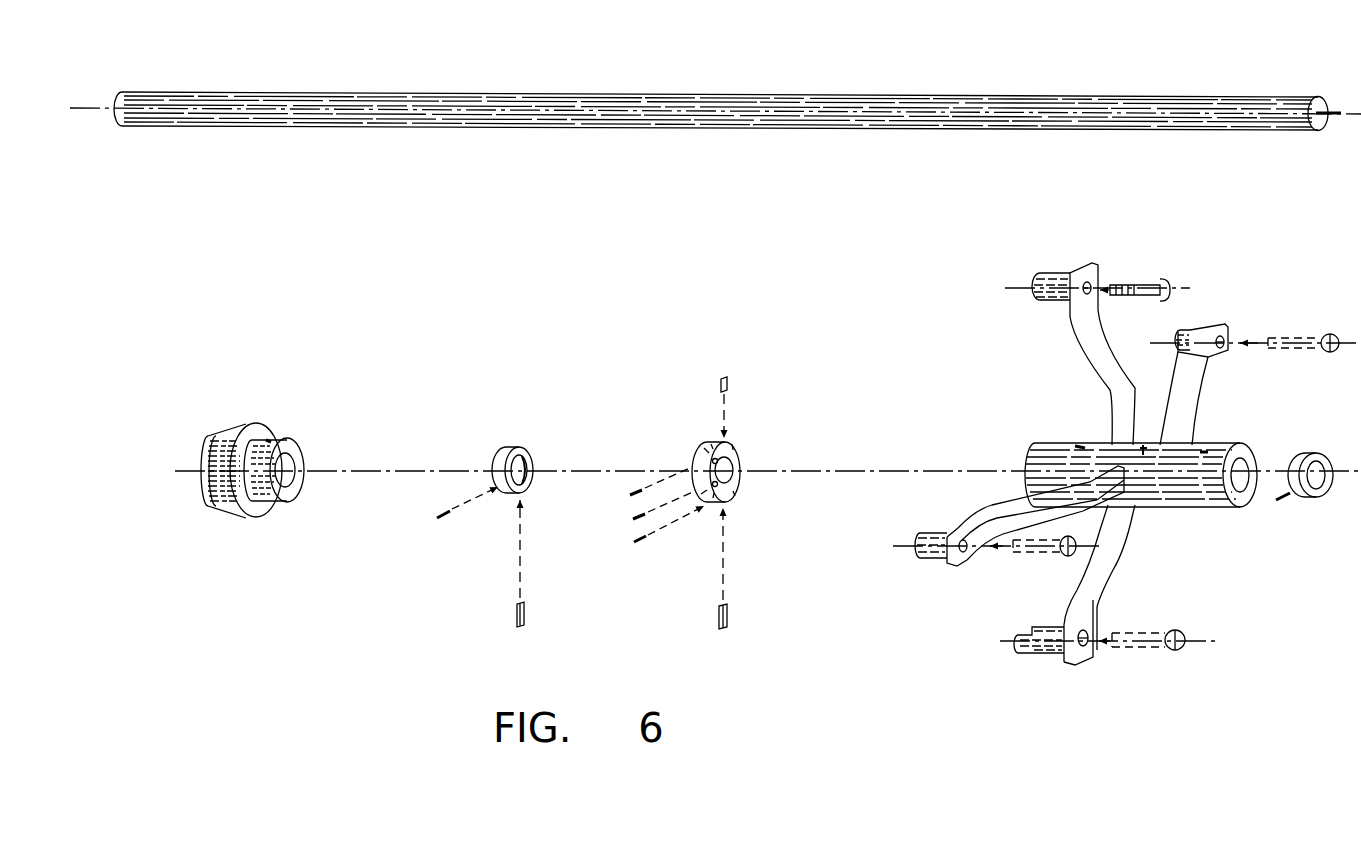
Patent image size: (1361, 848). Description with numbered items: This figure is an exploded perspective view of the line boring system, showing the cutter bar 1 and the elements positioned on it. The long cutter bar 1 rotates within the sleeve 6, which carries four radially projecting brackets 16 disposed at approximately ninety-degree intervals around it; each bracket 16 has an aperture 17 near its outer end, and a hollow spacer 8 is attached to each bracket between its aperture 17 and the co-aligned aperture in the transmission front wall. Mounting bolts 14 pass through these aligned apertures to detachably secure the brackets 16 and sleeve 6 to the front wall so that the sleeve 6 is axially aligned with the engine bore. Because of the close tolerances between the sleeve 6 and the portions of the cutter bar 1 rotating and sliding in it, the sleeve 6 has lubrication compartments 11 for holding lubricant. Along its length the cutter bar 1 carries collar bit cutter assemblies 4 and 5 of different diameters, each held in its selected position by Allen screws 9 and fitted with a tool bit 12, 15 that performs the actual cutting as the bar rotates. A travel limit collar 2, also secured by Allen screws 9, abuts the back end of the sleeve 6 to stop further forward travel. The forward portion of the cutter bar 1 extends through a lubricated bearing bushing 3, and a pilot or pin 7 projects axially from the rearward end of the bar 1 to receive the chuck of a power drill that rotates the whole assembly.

The cutter bar 1 is at (236, 104).
The travel limit collar 2 is at (1292, 478).
The lubricated bearing bushing 3 is at (175, 400).
The collar bit cutter assembly 4 is at (509, 428).
The collar bit cutter assembly 5 is at (704, 446).
The sleeve 6 is at (1182, 491).
The pilot or pin 7 is at (1336, 107).
The hollow spacer 8 is at (1045, 270).
The Allen screw 9 is at (432, 527).
The lubrication compartment 11 is at (268, 438).
The tool bit 12 is at (510, 614).
The mounting bolt 14 is at (1130, 282).
The tool bit 15 is at (716, 383).
The bracket 16 is at (982, 510).
The aperture 17 is at (965, 565).